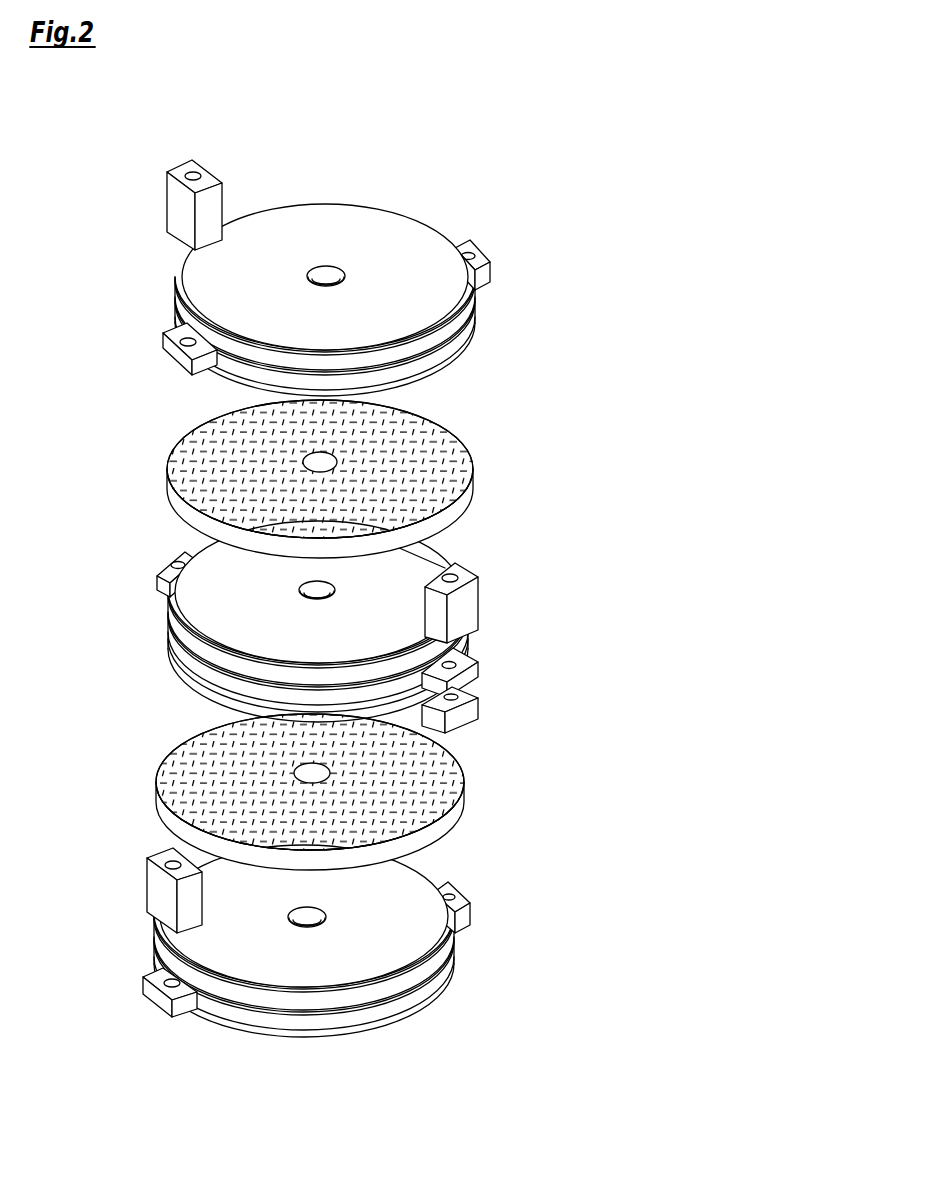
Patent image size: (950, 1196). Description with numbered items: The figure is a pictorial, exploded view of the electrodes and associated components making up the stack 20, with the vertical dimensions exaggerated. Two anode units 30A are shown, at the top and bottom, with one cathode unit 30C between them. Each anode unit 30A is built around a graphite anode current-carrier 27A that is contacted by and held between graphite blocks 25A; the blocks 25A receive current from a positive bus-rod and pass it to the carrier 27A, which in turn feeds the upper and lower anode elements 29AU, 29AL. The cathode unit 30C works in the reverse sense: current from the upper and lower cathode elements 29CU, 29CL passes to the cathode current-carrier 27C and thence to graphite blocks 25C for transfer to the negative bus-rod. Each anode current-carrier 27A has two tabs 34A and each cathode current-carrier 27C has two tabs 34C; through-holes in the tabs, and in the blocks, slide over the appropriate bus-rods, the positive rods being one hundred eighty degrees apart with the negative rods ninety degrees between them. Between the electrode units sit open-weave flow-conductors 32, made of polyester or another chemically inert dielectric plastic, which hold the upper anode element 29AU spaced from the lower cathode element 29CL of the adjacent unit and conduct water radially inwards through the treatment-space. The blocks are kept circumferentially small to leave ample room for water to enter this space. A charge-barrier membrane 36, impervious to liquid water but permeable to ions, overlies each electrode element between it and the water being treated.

The stack 20 is at (378, 186).
The graphite blocks 25A is at (173, 210).
The graphite blocks 25C is at (472, 600).
The anode current-carrier 27A is at (473, 338).
The cathode current-carrier 27C is at (187, 657).
The upper anode element 29AU is at (456, 325).
The lower anode element 29AL is at (460, 366).
The upper cathode element 29CU is at (178, 627).
The lower cathode element 29CL is at (210, 695).
The anode unit 30A is at (431, 364).
The cathode unit 30C is at (440, 554).
The flow-conductor 32 is at (193, 452).
The tabs 34A is at (458, 243).
The tabs 34C is at (163, 565).
The membrane 36 is at (395, 880).